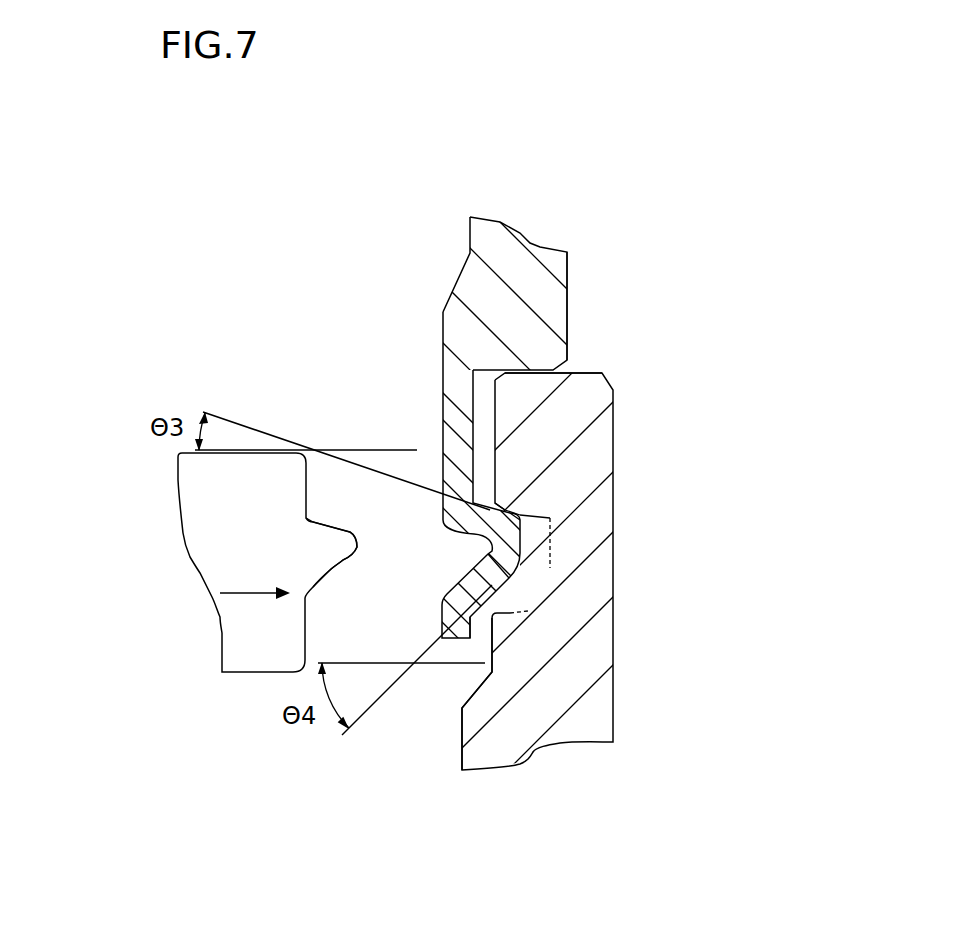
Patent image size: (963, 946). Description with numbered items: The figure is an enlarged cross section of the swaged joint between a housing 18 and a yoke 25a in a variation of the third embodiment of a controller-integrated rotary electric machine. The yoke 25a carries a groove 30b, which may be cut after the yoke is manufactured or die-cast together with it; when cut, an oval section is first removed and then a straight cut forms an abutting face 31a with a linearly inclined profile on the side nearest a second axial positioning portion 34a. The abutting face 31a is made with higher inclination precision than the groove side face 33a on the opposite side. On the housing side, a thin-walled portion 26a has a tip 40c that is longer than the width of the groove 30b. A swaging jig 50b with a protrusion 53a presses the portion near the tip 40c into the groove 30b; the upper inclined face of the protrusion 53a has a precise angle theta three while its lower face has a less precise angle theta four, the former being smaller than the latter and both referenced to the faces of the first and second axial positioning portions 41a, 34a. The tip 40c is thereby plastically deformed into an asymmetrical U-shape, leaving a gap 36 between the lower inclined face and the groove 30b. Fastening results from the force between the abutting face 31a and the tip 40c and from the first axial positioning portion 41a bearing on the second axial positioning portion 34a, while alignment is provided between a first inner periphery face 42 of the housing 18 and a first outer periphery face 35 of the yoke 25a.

The housing 18 is at (470, 253).
The first axial positioning portion 41a is at (533, 368).
The second axial positioning portion 34a is at (583, 375).
The first outer periphery face 35 is at (495, 428).
The abutting face 31a is at (515, 512).
The groove 30b is at (530, 542).
The groove side face 33a is at (550, 568).
The tip 40c is at (492, 576).
The gap 36 is at (530, 593).
The yoke 25a is at (613, 730).
The thin-walled portion 26a is at (443, 396).
The first inner periphery face 42 is at (493, 448).
The protrusion 53a is at (333, 543).
The swaging jig 50b is at (218, 607).